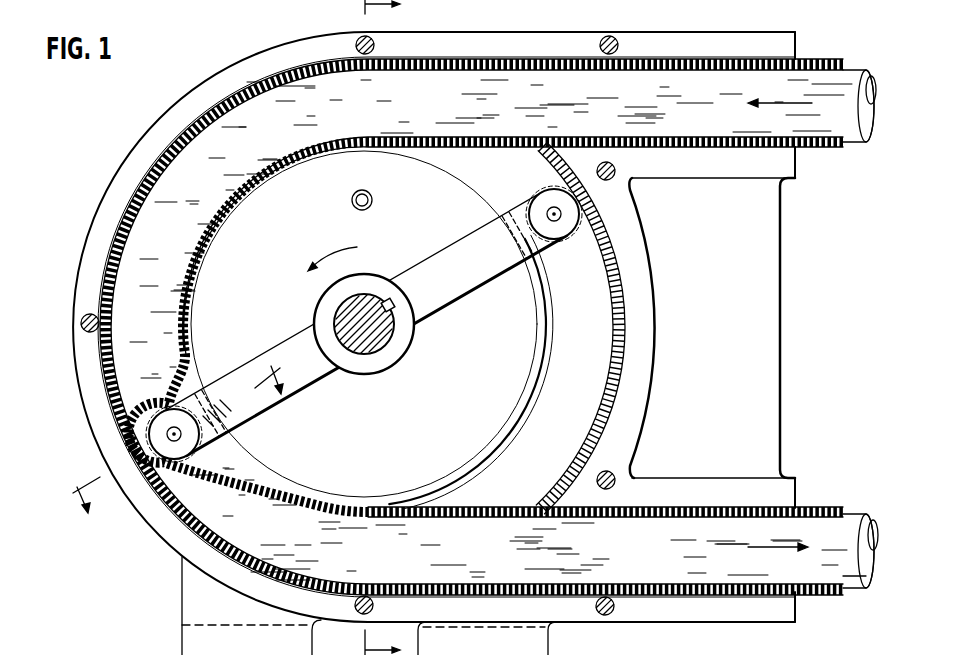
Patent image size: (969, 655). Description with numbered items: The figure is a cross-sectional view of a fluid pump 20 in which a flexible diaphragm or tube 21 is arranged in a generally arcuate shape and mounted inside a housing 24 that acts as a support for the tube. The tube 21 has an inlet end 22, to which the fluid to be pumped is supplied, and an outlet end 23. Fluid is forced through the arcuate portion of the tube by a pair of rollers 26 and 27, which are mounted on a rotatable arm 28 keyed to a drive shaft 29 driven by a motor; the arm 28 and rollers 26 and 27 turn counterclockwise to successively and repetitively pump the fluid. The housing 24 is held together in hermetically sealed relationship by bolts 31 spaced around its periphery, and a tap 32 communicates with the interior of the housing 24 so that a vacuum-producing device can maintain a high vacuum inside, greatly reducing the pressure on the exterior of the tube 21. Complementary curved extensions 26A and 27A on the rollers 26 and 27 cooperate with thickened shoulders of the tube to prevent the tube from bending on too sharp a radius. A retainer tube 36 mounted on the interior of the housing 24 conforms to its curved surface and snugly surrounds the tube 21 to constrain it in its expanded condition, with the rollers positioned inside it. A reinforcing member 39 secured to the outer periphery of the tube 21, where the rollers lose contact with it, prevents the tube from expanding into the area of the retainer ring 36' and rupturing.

The fluid pump 20 is at (784, 276).
The flexible diaphragm or tube 21 is at (656, 78).
The inlet end 22 is at (877, 144).
The outlet end 23 is at (882, 588).
The housing 24 is at (658, 312).
The roller 26 is at (200, 446).
The curved extension 26A is at (177, 428).
The roller 27 is at (560, 238).
The curved extension 27A is at (554, 212).
The rotatable arm 28 is at (474, 290).
The drive shaft 29 is at (363, 294).
The bolts 31 is at (83, 316).
The tap 32 is at (372, 201).
The retainer tube 36 is at (471, 327).
The retainer ring area 36' is at (408, 328).
The reinforcing member 39 is at (513, 507).